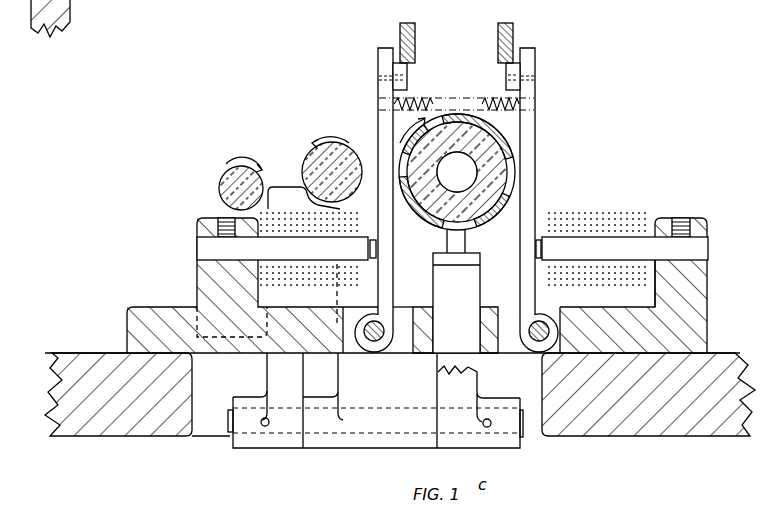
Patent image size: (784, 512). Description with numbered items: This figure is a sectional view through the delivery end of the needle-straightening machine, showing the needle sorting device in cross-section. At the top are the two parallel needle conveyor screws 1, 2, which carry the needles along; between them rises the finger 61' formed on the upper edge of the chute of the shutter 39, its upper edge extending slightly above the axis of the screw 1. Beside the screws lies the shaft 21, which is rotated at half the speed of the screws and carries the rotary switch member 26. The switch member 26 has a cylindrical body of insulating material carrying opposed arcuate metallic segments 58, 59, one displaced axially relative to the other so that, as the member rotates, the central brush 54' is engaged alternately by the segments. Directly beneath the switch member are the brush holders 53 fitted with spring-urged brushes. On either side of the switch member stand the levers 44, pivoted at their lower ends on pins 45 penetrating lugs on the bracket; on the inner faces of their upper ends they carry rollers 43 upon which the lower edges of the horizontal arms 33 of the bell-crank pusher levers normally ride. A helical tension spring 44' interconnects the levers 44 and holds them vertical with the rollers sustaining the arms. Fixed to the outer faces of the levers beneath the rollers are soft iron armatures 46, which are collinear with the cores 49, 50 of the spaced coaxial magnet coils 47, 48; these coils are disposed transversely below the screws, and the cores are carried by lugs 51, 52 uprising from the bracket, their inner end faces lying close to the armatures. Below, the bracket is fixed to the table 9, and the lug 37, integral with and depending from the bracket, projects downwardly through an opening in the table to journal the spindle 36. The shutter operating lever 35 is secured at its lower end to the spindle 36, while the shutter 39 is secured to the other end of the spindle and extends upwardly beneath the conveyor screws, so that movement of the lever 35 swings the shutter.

The needle conveyor screw 1 is at (241, 183).
The conveyor screw 2 is at (332, 169).
The table 9 is at (400, 394).
The shaft 21 is at (457, 172).
The rotary switch member 26 is at (487, 154).
The pusher lever arm 33 is at (400, 30).
The shutter operating lever 35 is at (458, 385).
The spindle 36 is at (229, 432).
The lug 37 is at (378, 440).
The shutter 39 is at (278, 371).
The roller 43 is at (407, 69).
The lever 44 is at (454, 200).
The helical tension spring 44' is at (456, 94).
The pin 45 is at (375, 342).
The soft iron armature 46 is at (377, 248).
The magnet coil 47 is at (292, 272).
The magnet coil 48 is at (598, 281).
The core 49 is at (282, 248).
The core 50 is at (625, 248).
The lug 51 is at (212, 278).
The lug 52 is at (688, 284).
The brush holder 53 is at (456, 303).
The central brush 54' is at (474, 241).
The arcuate metallic segment 58 is at (406, 135).
The arcuate metallic segment 59 is at (505, 204).
The finger 61' is at (304, 163).